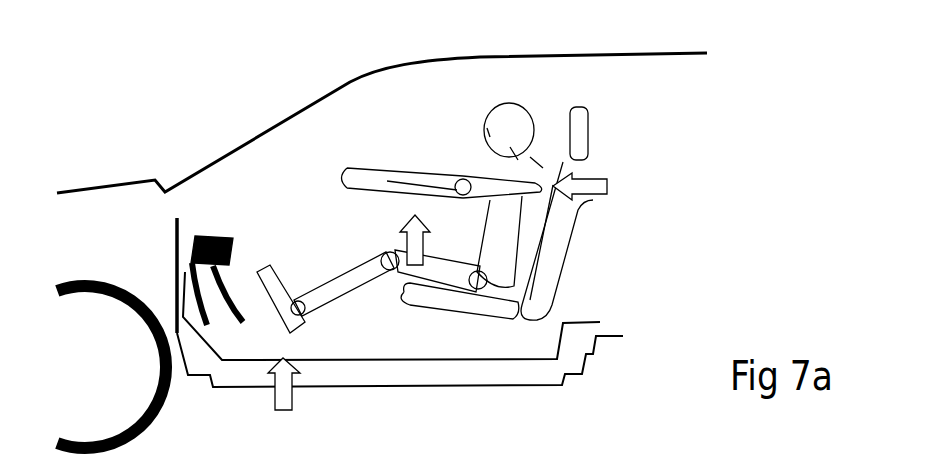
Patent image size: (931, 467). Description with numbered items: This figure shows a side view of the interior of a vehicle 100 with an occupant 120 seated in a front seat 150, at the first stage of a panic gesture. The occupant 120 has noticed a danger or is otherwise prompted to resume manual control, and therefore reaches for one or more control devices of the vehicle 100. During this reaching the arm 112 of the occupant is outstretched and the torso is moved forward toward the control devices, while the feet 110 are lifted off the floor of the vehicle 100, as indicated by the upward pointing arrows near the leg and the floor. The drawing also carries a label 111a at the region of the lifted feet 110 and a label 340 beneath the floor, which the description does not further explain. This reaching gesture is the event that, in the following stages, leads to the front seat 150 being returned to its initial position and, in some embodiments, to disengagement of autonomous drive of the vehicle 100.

The vehicle 100 is at (176, 91).
The feet 110 is at (297, 266).
The heel 111a is at (327, 346).
The arm 112 is at (412, 149).
The occupant 120 is at (561, 74).
The front seat 150 is at (615, 211).
The floor lifting direction 340 is at (283, 388).